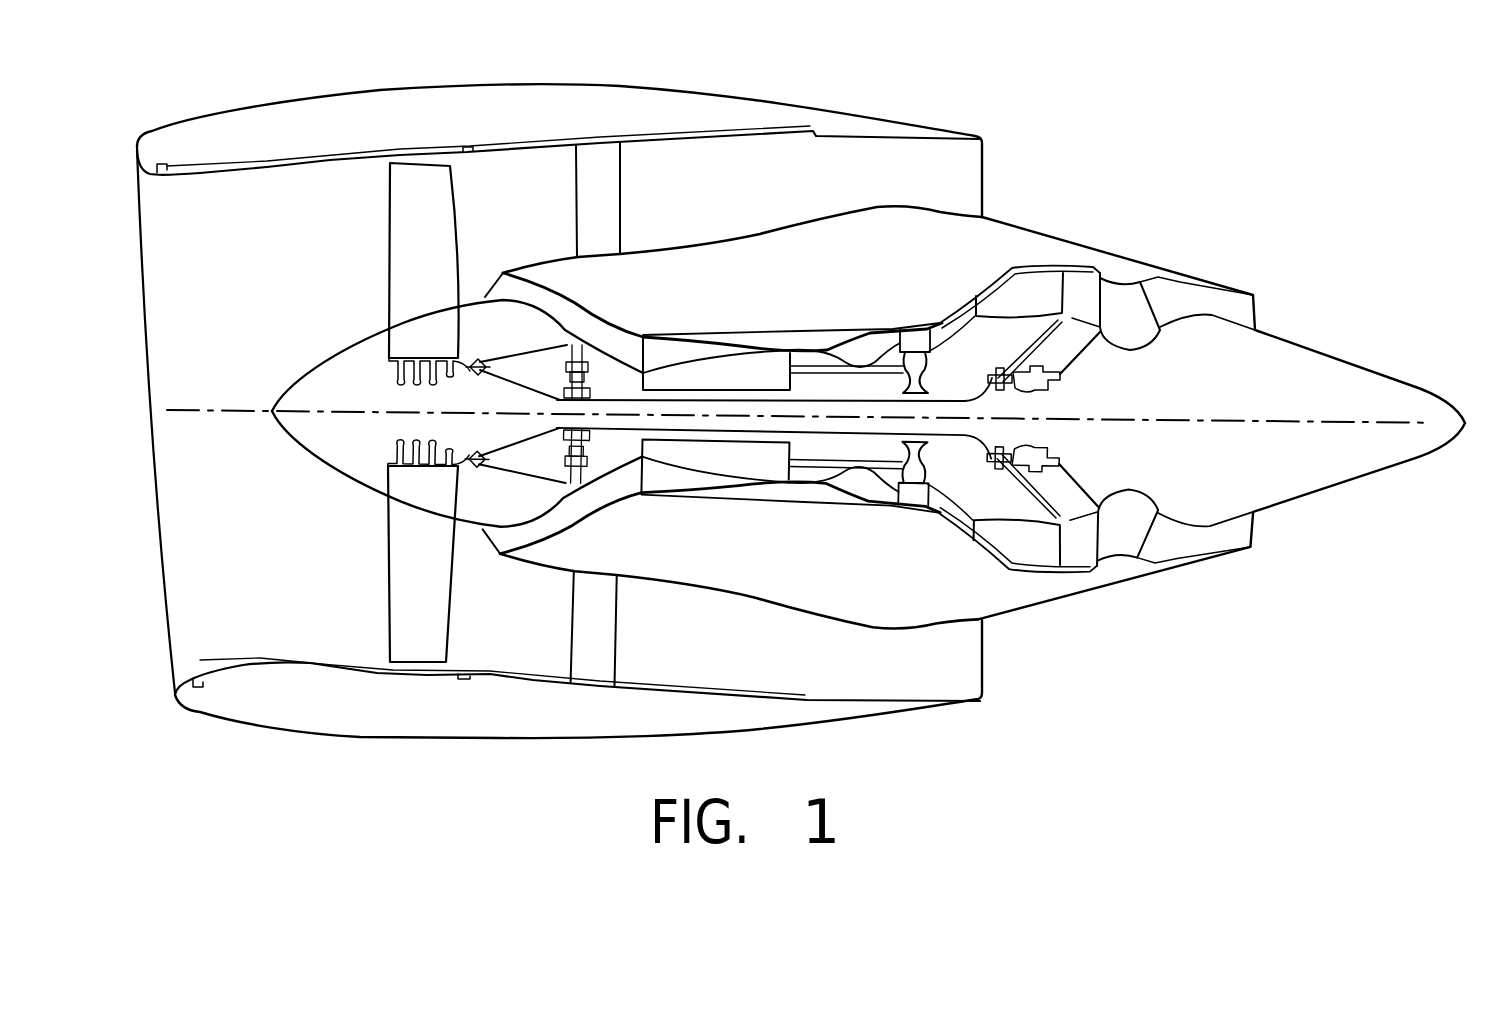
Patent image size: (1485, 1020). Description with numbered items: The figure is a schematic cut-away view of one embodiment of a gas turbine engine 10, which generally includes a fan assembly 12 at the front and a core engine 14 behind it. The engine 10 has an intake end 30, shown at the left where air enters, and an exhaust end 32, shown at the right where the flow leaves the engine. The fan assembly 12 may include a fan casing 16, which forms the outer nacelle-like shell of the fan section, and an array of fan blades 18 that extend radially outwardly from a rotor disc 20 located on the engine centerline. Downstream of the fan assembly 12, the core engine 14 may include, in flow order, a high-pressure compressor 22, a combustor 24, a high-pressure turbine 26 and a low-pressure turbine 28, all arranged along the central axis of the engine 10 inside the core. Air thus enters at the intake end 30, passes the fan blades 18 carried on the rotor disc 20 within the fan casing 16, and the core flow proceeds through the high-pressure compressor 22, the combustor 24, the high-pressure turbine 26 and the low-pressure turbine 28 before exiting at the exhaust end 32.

The gas turbine engine 10 is at (915, 60).
The fan assembly 12 is at (352, 602).
The core engine 14 is at (1083, 665).
The fan casing 16 is at (524, 682).
The fan blades 18 is at (412, 233).
The rotor disc 20 is at (347, 445).
The high-pressure compressor 22 is at (665, 350).
The combustor 24 is at (867, 350).
The high-pressure turbine 26 is at (908, 505).
The low-pressure turbine 28 is at (1020, 287).
The intake end 30 is at (134, 182).
The exhaust end 32 is at (1058, 162).